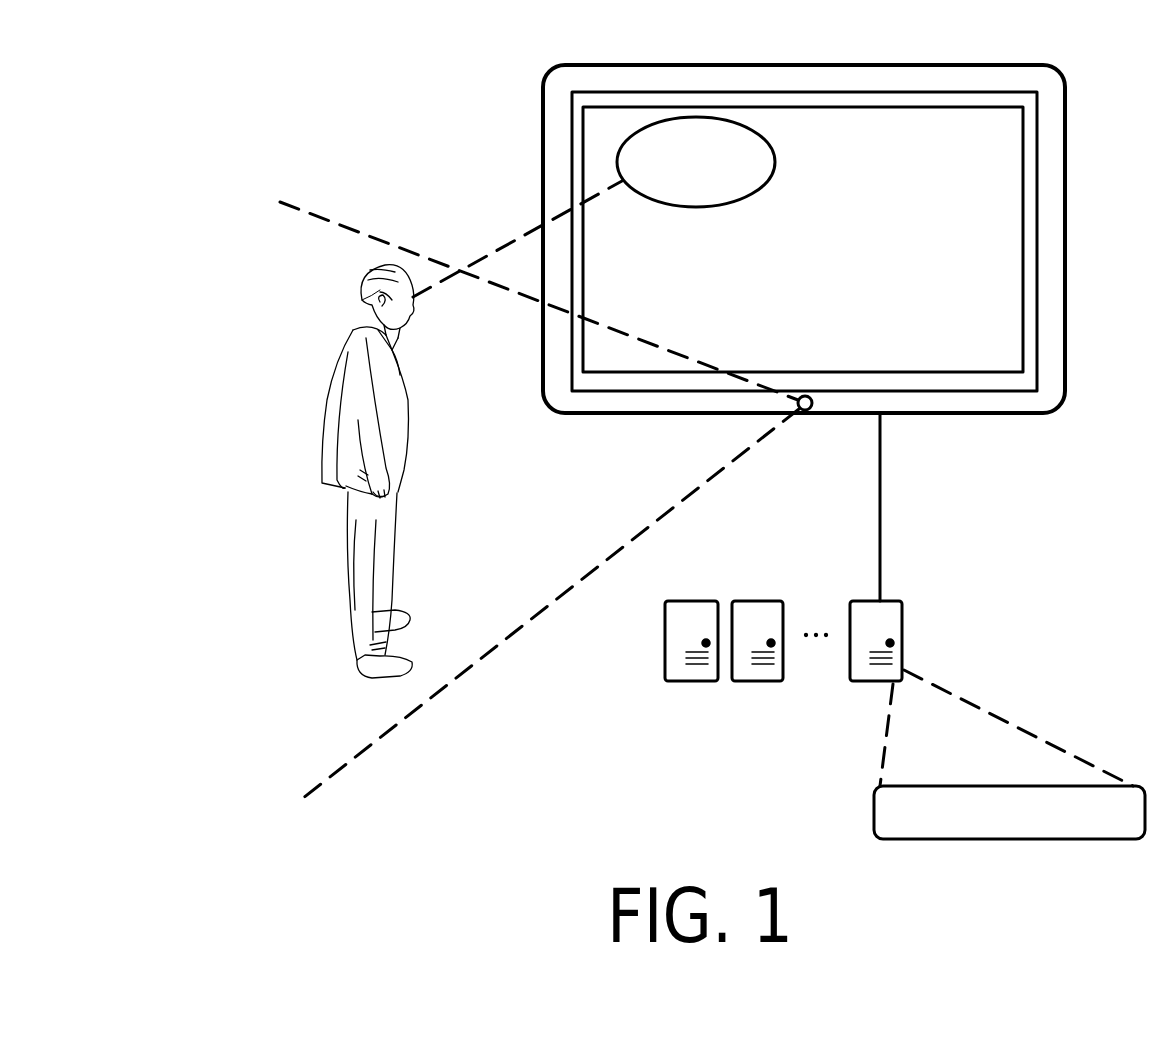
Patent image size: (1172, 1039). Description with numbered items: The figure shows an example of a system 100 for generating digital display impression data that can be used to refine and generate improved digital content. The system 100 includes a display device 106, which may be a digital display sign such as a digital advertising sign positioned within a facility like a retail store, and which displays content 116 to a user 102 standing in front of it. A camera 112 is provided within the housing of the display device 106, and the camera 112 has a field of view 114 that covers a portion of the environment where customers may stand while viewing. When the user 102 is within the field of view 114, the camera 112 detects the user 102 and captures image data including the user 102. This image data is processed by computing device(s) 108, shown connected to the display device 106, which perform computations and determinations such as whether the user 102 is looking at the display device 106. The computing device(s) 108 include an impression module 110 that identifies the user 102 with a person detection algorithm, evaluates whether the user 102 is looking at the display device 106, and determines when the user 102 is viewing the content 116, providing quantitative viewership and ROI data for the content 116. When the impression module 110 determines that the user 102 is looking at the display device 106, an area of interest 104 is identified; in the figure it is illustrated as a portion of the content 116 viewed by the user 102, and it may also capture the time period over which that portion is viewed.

The system 100 is at (133, 111).
The user 102 is at (355, 325).
The area of interest 104 is at (630, 137).
The display device 106 is at (962, 413).
The computing device(s) 108 is at (783, 671).
The impression module 110 is at (1009, 754).
The camera 112 is at (808, 413).
The field of view 114 is at (360, 230).
The content 116 is at (805, 240).